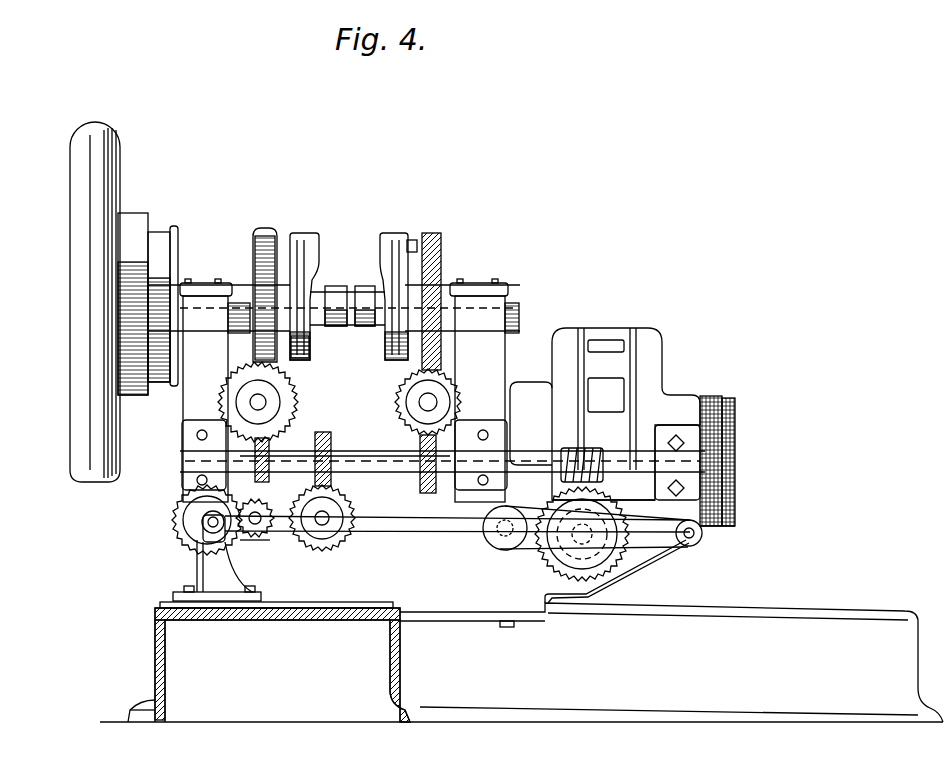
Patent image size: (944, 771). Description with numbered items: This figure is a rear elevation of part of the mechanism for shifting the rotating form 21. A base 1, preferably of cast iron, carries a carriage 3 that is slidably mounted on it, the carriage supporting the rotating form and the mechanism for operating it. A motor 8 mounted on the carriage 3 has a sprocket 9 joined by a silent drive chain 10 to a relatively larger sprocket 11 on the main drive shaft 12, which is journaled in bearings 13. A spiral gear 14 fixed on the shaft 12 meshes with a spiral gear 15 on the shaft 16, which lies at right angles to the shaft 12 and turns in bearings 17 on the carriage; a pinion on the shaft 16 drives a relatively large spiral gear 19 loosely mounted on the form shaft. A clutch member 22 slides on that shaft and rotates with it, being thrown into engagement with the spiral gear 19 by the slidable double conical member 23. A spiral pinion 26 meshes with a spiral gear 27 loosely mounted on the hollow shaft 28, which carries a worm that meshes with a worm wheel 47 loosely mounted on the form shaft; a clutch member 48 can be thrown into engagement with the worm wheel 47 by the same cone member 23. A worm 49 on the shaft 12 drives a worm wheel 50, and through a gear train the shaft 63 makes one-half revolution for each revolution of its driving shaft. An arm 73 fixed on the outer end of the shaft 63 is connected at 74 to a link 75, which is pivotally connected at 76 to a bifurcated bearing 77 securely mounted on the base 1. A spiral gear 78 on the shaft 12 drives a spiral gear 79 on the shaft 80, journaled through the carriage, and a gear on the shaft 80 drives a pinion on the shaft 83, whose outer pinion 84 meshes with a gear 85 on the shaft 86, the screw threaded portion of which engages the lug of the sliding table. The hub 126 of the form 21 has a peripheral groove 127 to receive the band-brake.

The base 1 is at (157, 653).
The carriage 3 is at (297, 587).
The motor 8 is at (652, 352).
The sprocket 9 is at (736, 402).
The silent drive chain 10 is at (716, 396).
The sprocket 11 is at (735, 480).
The main drive shaft 12 is at (350, 454).
The bearings 13 is at (200, 458).
The spiral gear 14 is at (422, 482).
The spiral gear 15 is at (400, 390).
The shaft 16 is at (436, 402).
The bearings 17 is at (407, 446).
The spiral gear 19 is at (442, 262).
The rotating form 21 is at (80, 184).
The clutch member 22 is at (395, 250).
The double conical member 23 is at (335, 286).
The spiral pinion 26 is at (257, 478).
The spiral gear 27 is at (228, 388).
The hollow shaft 28 is at (250, 402).
The worm wheel 47 is at (266, 228).
The clutch member 48 is at (310, 344).
The worm 49 is at (566, 450).
The worm wheel 50 is at (610, 556).
The shaft 63 is at (503, 548).
The arm 73 is at (540, 562).
The connection point 74 is at (698, 543).
The link 75 is at (400, 533).
The pivot connection 76 is at (190, 532).
The bifurcated bearing 77 is at (215, 561).
The spiral gear 78 is at (323, 432).
The spiral gear 79 is at (328, 548).
The shaft 80 is at (328, 516).
The shaft 83 is at (262, 506).
The pinion 84 is at (258, 541).
The gear 85 is at (185, 512).
The shaft 86 is at (202, 518).
The hub 126 is at (130, 222).
The peripheral groove 127 is at (173, 232).